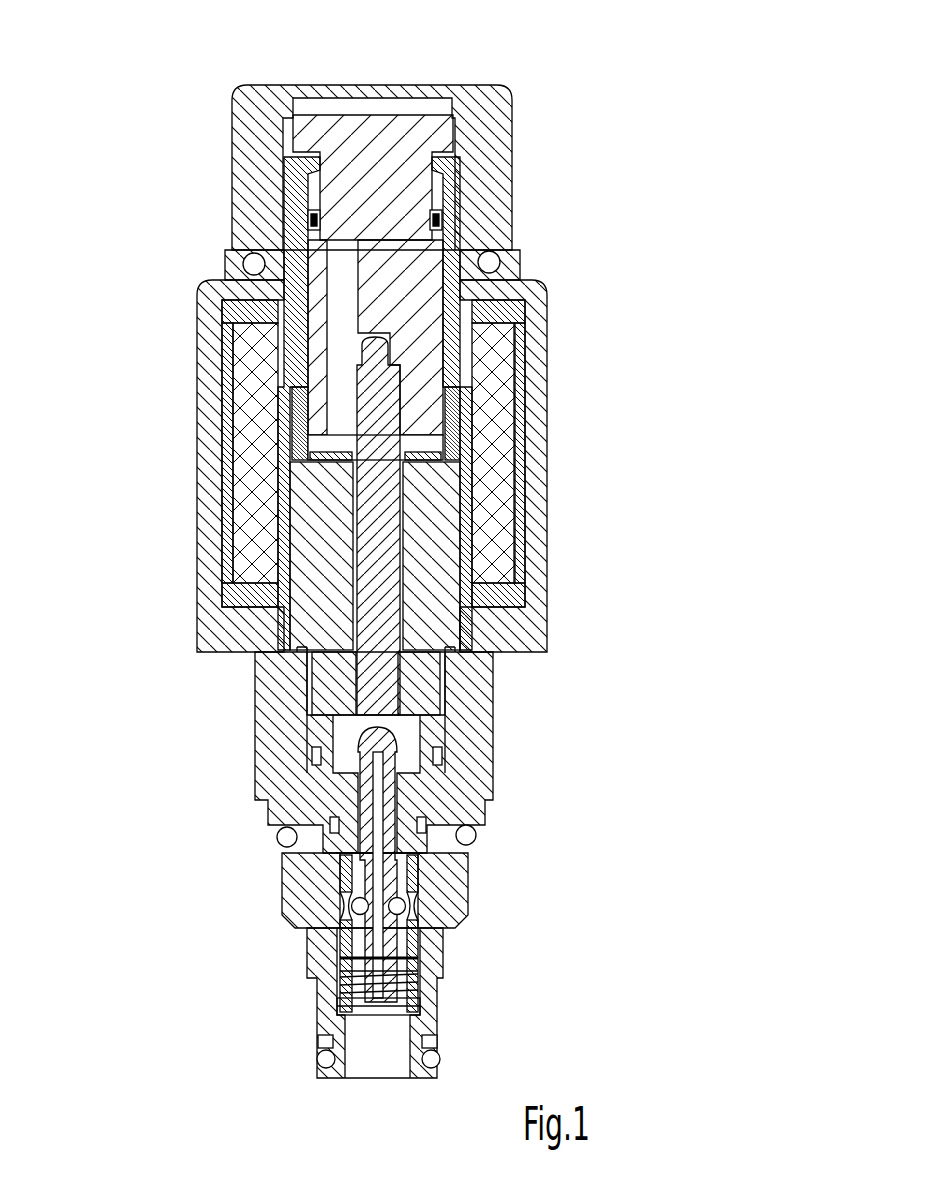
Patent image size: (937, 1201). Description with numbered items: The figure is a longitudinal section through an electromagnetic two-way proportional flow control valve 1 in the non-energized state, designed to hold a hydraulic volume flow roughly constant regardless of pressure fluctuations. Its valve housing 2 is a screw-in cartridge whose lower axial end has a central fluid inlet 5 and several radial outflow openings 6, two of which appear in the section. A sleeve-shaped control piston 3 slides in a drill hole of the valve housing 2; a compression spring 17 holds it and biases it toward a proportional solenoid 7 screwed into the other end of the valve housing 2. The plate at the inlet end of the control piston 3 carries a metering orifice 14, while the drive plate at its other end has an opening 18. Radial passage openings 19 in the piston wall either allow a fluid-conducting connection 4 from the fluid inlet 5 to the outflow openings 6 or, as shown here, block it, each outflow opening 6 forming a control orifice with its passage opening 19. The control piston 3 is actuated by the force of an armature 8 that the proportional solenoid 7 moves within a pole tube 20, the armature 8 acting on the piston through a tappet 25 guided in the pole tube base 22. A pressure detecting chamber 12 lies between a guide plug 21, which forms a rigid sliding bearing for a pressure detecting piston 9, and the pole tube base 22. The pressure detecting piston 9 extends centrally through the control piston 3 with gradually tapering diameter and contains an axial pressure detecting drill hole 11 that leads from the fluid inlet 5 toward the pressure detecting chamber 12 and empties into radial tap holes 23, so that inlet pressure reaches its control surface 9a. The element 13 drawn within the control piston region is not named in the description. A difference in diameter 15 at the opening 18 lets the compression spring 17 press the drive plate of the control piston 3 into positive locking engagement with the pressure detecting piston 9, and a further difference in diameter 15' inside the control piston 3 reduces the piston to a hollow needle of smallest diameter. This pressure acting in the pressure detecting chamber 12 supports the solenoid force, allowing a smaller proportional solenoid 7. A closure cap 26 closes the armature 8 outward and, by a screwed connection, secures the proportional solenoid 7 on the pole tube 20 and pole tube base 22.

The flow control valve 1 is at (172, 150).
The valve housing 2 is at (480, 728).
The control piston 3 is at (420, 893).
The fluid-conducting connection 4 is at (298, 950).
The fluid inlet 5 is at (390, 1066).
The outflow openings 6 is at (335, 950).
The proportional solenoid 7 is at (492, 378).
The armature 8 is at (405, 238).
The pressure detecting piston 9 is at (356, 775).
The control surface 9a is at (353, 1042).
The pressure detecting drill hole 11 is at (440, 812).
The pressure detecting chamber 12 is at (445, 705).
The valve stem 13 is at (398, 860).
The metering orifice 14 is at (437, 987).
The difference in diameter 15 is at (287, 932).
The additional difference in diameter 15' is at (244, 930).
The compression spring 17 is at (343, 1012).
The opening 18 is at (276, 836).
The radial passage openings 19 is at (406, 912).
The pole tube 20 is at (447, 293).
The guide plug 21 is at (477, 838).
The pole tube base 22 is at (430, 518).
The tap holes 23 is at (318, 748).
The tappet 25 is at (376, 568).
The closure cap 26 is at (485, 133).